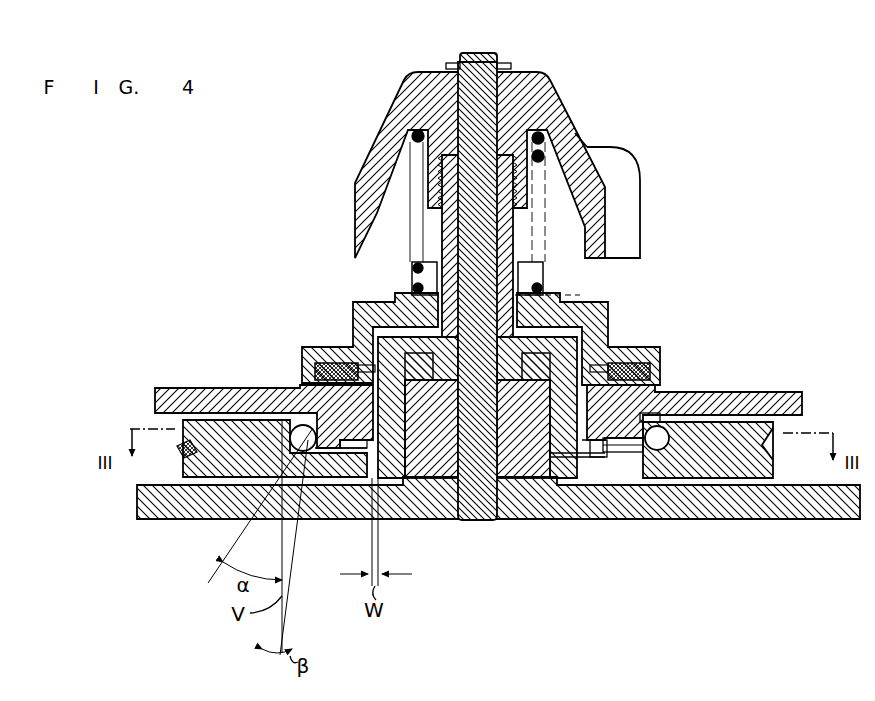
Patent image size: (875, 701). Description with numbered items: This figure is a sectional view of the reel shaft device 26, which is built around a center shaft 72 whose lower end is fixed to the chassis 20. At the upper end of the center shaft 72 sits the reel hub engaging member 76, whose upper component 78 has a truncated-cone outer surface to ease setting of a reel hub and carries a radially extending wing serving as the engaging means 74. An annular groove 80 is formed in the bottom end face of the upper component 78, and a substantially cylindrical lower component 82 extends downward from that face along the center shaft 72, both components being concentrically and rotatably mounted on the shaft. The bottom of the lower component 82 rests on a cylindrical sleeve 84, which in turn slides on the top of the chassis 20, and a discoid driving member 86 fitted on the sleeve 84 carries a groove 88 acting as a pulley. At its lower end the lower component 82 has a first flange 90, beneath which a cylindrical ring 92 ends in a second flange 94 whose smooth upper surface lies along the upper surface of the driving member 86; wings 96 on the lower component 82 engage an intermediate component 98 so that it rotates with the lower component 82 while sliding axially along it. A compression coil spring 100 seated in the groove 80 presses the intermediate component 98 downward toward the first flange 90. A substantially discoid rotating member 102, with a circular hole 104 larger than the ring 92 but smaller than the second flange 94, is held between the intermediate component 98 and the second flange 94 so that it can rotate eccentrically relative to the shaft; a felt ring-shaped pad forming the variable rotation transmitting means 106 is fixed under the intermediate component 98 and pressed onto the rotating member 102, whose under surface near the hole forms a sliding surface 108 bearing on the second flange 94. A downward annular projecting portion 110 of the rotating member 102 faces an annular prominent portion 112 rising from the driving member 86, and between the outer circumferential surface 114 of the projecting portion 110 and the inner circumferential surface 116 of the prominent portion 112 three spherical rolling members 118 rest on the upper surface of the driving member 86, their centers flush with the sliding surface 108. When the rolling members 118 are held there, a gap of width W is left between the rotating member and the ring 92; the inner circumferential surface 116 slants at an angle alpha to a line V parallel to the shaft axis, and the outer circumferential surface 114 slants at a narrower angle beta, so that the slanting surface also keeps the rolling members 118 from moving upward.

The chassis 20 is at (828, 505).
The reel shaft device 26 is at (374, 137).
The center shaft 72 is at (470, 508).
The engaging means 74 is at (630, 233).
The reel hub engaging member 76 is at (588, 146).
The upper component 78 is at (553, 104).
The annular groove 80 is at (580, 262).
The lower component 82 is at (507, 242).
The sleeve 84 is at (512, 470).
The driving member 86 is at (770, 423).
The groove 88 is at (775, 446).
The first flange 90 is at (568, 352).
The ring 92 is at (643, 416).
The second flange 94 is at (585, 452).
The wings 96 is at (412, 290).
The intermediate component 98 is at (608, 306).
The compression coil spring 100 is at (412, 268).
The rotating member 102 is at (757, 392).
The circular hole 104 is at (402, 482).
The variable rotation transmitting means 106 is at (330, 364).
The sliding surface 108 is at (357, 462).
The projecting portion 110 is at (622, 445).
The prominent portion 112 is at (720, 456).
The outer circumferential surface 114 is at (648, 420).
The inner circumferential surface 116 is at (700, 453).
The rolling members 118 is at (322, 456).